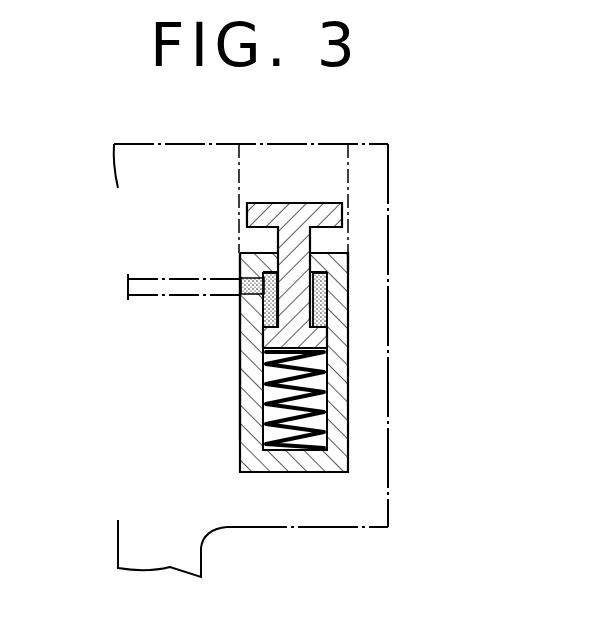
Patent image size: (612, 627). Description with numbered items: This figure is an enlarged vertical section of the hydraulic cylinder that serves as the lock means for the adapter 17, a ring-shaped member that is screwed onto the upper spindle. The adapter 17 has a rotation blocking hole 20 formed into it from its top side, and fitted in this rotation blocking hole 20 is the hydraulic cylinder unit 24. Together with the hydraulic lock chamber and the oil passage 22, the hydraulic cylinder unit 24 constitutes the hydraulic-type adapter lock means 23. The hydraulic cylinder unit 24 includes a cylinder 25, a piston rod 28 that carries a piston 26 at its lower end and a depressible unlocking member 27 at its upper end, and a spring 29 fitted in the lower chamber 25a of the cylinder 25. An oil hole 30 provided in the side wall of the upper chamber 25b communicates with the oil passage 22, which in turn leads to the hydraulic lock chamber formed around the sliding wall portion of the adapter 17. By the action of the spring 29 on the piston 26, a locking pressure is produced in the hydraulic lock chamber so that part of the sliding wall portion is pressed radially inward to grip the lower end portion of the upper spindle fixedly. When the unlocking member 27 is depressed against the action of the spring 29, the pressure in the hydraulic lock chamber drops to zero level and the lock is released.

The adapter 17 is at (388, 513).
The rotation blocking hole 20 is at (250, 166).
The oil passage 22 is at (163, 292).
The adapter lock means 23 is at (228, 262).
The hydraulic cylinder unit 24 is at (360, 242).
The cylinder 25 is at (321, 363).
The lower chamber 25a is at (318, 437).
The upper chamber 25b is at (244, 318).
The piston 26 is at (320, 338).
The depressible unlocking member 27 is at (315, 212).
The piston rod 28 is at (350, 272).
The spring 29 is at (325, 396).
The oil hole 30 is at (243, 290).